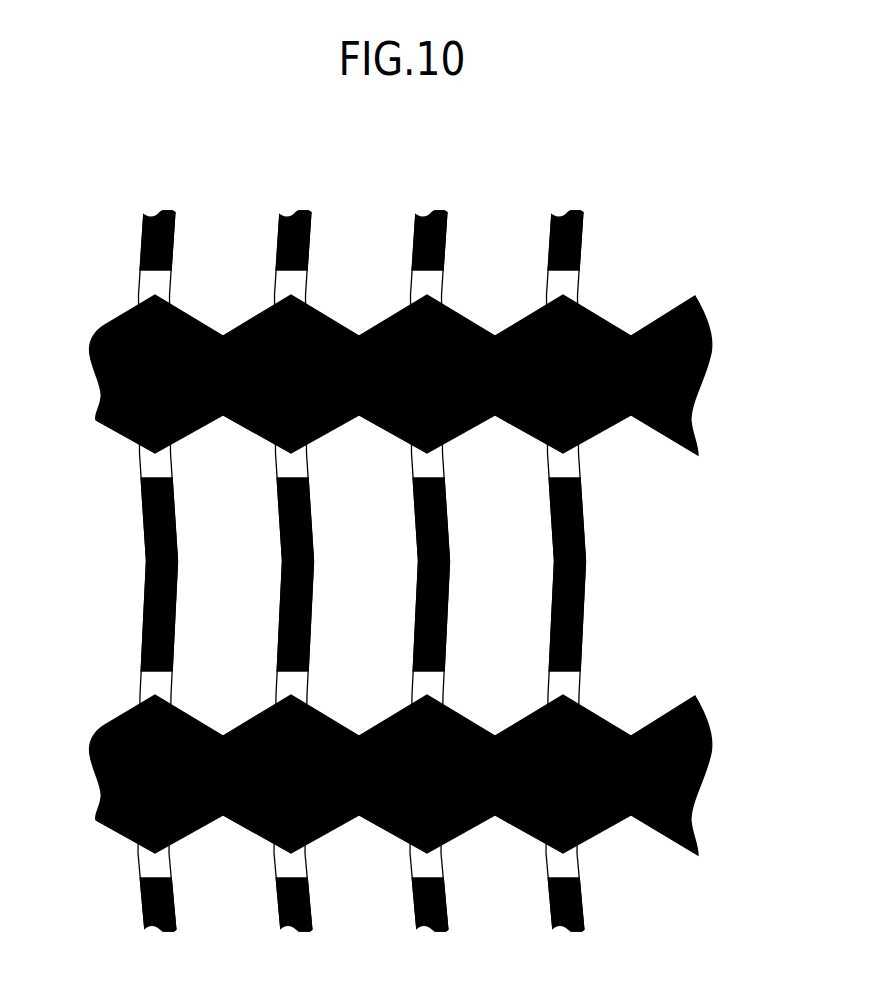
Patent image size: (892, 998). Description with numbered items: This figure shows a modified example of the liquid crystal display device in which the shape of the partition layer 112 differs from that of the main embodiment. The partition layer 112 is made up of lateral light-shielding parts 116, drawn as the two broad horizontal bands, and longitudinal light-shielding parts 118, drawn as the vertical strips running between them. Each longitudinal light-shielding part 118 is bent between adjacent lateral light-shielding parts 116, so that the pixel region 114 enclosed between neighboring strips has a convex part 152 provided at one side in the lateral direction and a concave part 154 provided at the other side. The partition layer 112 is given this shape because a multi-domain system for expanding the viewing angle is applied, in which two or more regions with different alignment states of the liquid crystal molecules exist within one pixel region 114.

The partition layer 112 is at (640, 216).
The pixel region 114 is at (192, 619).
The lateral light-shielding part 116 is at (675, 370).
The longitudinal light-shielding part 118 is at (153, 212).
The convex part 152 is at (281, 548).
The concave part 154 is at (165, 550).